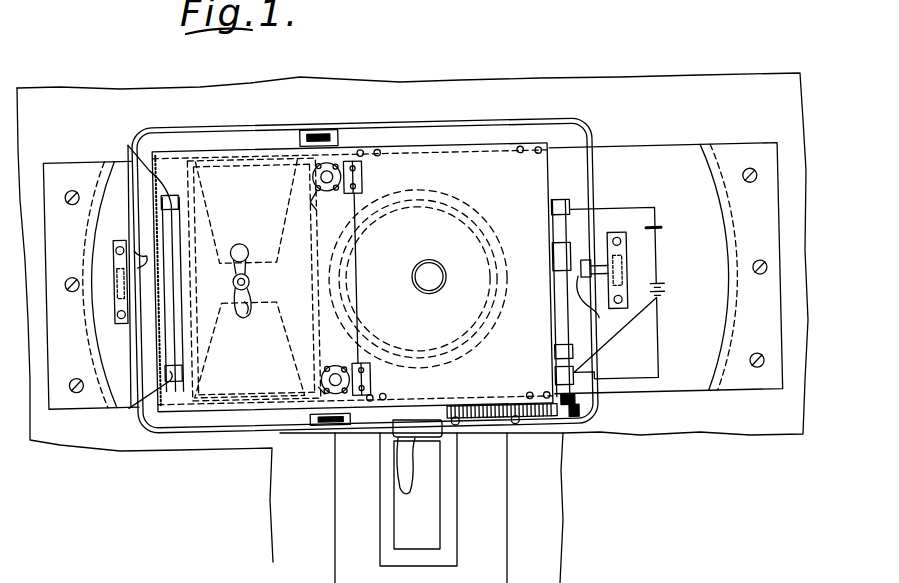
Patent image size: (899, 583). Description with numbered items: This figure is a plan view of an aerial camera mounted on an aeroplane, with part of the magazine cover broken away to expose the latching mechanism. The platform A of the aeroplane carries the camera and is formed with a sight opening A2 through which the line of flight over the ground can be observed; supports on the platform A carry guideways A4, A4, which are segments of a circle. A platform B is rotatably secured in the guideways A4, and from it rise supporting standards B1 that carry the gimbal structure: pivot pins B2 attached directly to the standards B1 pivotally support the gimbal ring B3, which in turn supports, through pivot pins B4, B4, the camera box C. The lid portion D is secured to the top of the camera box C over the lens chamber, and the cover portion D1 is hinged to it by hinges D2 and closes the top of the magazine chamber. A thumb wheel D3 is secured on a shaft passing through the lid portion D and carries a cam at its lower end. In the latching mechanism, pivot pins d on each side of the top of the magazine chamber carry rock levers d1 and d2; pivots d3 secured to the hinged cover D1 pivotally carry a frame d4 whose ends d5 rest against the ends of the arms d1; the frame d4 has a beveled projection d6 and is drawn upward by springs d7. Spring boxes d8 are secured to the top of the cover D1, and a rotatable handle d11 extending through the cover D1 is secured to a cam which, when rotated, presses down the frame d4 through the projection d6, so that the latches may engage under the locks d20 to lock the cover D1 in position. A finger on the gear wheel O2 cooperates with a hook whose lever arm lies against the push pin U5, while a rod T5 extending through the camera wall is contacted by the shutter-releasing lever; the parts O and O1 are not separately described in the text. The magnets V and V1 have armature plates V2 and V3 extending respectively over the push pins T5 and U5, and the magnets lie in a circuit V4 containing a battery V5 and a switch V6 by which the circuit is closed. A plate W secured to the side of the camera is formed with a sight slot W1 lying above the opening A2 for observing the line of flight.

The platform of the aeroplane A is at (412, 328).
The sight opening A2 is at (336, 505).
The guideways A4 is at (722, 308).
The platform B is at (407, 274).
The supporting standards B1 is at (613, 258).
The pivot pins B2 is at (598, 322).
The gimbal ring B3 is at (595, 182).
The pivot pins B4 is at (323, 131).
The camera box C is at (562, 276).
The lid portion D is at (352, 277).
The cover portion D1 is at (239, 208).
The hinges D2 is at (366, 183).
The thumb wheel D3 is at (430, 272).
The pivot pins d is at (253, 279).
The rock lever d1 is at (246, 278).
The rock lever d2 is at (209, 257).
The pivots d3 is at (270, 205).
The frame d4 is at (251, 262).
The ends of the frame d5 is at (198, 404).
The beveled projection d6 is at (280, 370).
The springs d7 is at (283, 390).
The spring boxes d8 is at (335, 191).
The rotatable handle d11 is at (249, 309).
The locks d20 is at (131, 139).
The key O is at (432, 434).
The rack O1 is at (457, 408).
The gear wheel O2 is at (527, 433).
The rod T5 is at (558, 198).
The push pin U5 is at (569, 429).
The magnet V is at (555, 270).
The magnet V1 is at (556, 355).
The armature plate V2 is at (556, 228).
The armature plate V3 is at (556, 381).
The circuit V4 is at (660, 333).
The battery V5 is at (665, 296).
The switch V6 is at (662, 241).
The plate W is at (453, 521).
The sight slot W1 is at (443, 501).